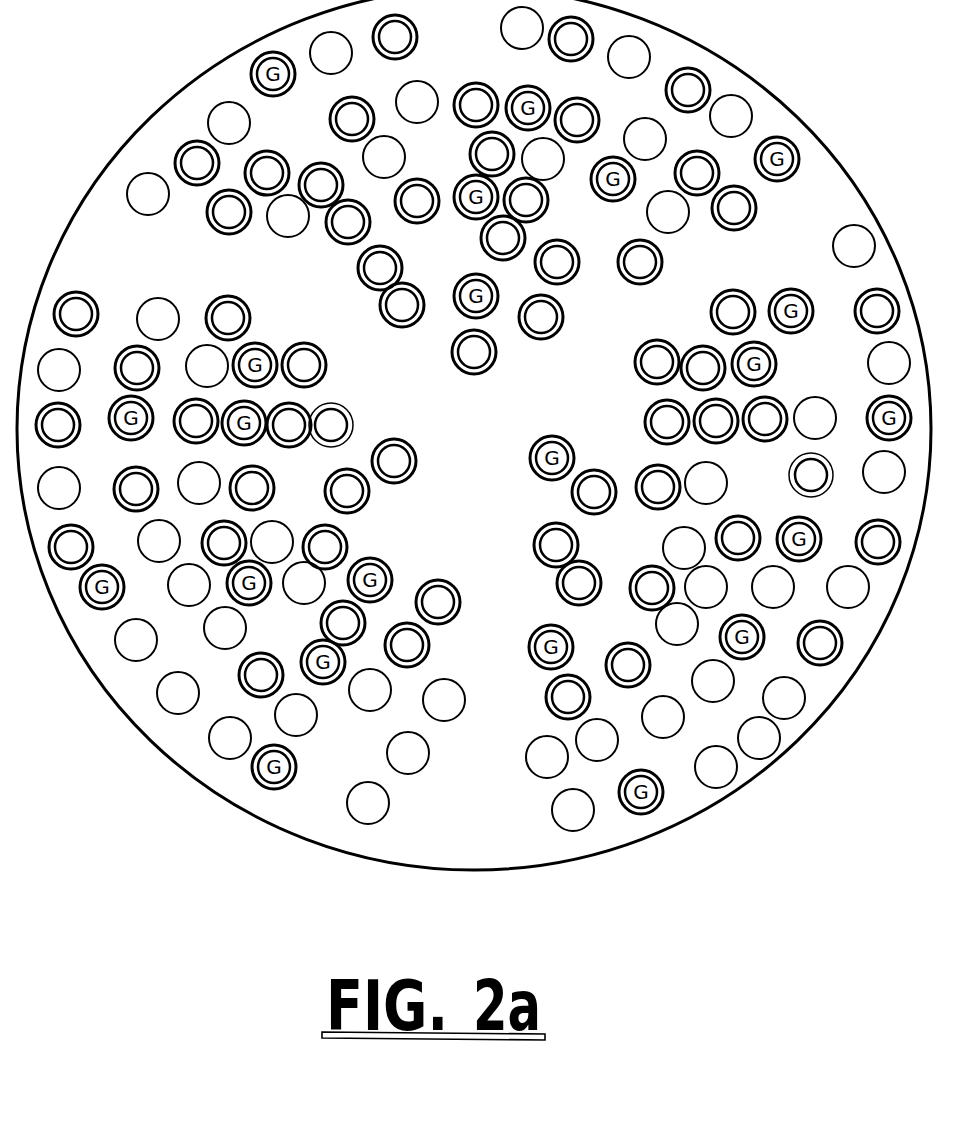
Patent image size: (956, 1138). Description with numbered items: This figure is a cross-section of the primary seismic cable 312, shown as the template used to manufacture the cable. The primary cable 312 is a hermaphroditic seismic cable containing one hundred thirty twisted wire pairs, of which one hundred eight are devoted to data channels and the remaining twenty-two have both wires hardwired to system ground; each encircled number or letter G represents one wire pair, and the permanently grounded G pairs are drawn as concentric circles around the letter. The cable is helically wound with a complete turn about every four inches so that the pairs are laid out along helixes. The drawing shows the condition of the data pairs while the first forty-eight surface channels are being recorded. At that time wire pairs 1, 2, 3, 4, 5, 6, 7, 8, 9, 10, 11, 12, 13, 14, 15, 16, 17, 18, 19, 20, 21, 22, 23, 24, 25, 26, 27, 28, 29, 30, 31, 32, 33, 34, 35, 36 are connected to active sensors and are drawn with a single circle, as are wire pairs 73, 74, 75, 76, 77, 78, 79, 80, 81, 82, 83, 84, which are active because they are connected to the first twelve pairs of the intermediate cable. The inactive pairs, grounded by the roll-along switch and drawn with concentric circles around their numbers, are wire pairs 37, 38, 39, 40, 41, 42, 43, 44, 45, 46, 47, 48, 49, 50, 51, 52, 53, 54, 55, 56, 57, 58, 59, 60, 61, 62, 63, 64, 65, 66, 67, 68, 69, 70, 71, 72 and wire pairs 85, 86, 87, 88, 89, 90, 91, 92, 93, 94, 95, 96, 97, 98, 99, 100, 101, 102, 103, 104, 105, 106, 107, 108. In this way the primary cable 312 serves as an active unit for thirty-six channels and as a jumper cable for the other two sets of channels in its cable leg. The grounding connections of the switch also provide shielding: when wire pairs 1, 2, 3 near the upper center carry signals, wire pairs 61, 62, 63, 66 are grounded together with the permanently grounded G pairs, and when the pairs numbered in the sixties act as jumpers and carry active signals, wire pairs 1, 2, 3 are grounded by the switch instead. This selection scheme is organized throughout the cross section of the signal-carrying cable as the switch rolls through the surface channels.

The primary seismic cable 312 is at (195, 814).
The wire pair 1 is at (522, 28).
The wire pair 2 is at (629, 57).
The wire pair 3 is at (543, 159).
The wire pair 4 is at (731, 116).
The wire pair 5 is at (645, 139).
The wire pair 6 is at (668, 212).
The wire pair 7 is at (854, 246).
The wire pair 8 is at (889, 363).
The wire pair 9 is at (815, 418).
The wire pair 10 is at (884, 472).
The wire pair 11 is at (848, 587).
The wire pair 12 is at (706, 483).
The wire pair 13 is at (784, 698).
The wire pair 14 is at (713, 681).
The wire pair 15 is at (706, 587).
The wire pair 16 is at (716, 767).
The wire pair 17 is at (573, 810).
The wire pair 18 is at (547, 757).
The wire pair 19 is at (368, 803).
The wire pair 20 is at (230, 738).
The wire pair 21 is at (370, 690).
The wire pair 22 is at (136, 640).
The wire pair 23 is at (225, 628).
The wire pair 24 is at (272, 542).
The wire pair 25 is at (59, 488).
The wire pair 26 is at (159, 541).
The wire pair 27 is at (199, 483).
The wire pair 28 is at (59, 370).
The wire pair 29 is at (158, 319).
The wire pair 30 is at (207, 366).
The wire pair 31 is at (148, 194).
The wire pair 32 is at (229, 123).
The wire pair 33 is at (288, 216).
The wire pair 34 is at (331, 53).
The wire pair 35 is at (417, 102).
The wire pair 36 is at (384, 157).
The wire pair 37 is at (734, 208).
The wire pair 38 is at (224, 543).
The wire pair 39 is at (820, 643).
The wire pair 40 is at (394, 461).
The wire pair 41 is at (261, 675).
The wire pair 42 is at (71, 547).
The wire pair 43 is at (196, 421).
The wire pair 44 is at (492, 154).
The wire pair 45 is at (229, 212).
The wire pair 46 is at (417, 201).
The wire pair 47 is at (321, 185).
The wire pair 48 is at (395, 37).
The wire pair 49 is at (289, 425).
The wire pair 50 is at (325, 547).
The wire pair 51 is at (407, 645).
The wire pair 52 is at (556, 545).
The wire pair 53 is at (568, 697).
The wire pair 54 is at (652, 588).
The wire pair 55 is at (658, 487).
The wire pair 56 is at (716, 421).
The wire pair 57 is at (657, 362).
The wire pair 58 is at (541, 317).
The wire pair 59 is at (402, 305).
The wire pair 60 is at (557, 262).
The wire pair 61 is at (526, 200).
The wire pair 62 is at (577, 120).
The wire pair 63 is at (571, 39).
The wire pair 64 is at (640, 262).
The wire pair 65 is at (697, 173).
The wire pair 66 is at (688, 90).
The wire pair 67 is at (877, 311).
The wire pair 68 is at (765, 419).
The wire pair 69 is at (733, 312).
The wire pair 70 is at (878, 542).
The wire pair 71 is at (811, 475).
The wire pair 72 is at (738, 538).
The wire pair 73 is at (684, 548).
The wire pair 74 is at (773, 587).
The wire pair 75 is at (677, 624).
The wire pair 76 is at (759, 738).
The wire pair 77 is at (597, 740).
The wire pair 78 is at (663, 717).
The wire pair 79 is at (444, 700).
The wire pair 80 is at (408, 753).
The wire pair 81 is at (296, 715).
The wire pair 82 is at (304, 583).
The wire pair 83 is at (189, 585).
The wire pair 84 is at (178, 693).
The wire pair 85 is at (252, 488).
The wire pair 86 is at (136, 489).
The wire pair 87 is at (58, 425).
The wire pair 88 is at (228, 318).
The wire pair 89 is at (137, 368).
The wire pair 90 is at (76, 314).
The wire pair 91 is at (348, 222).
The wire pair 92 is at (267, 173).
The wire pair 93 is at (197, 163).
The wire pair 94 is at (476, 105).
The wire pair 95 is at (352, 119).
The wire pair 96 is at (304, 365).
The wire pair 97 is at (331, 425).
The wire pair 98 is at (347, 491).
The wire pair 99 is at (343, 623).
The wire pair 100 is at (438, 602).
The wire pair 101 is at (628, 665).
The wire pair 102 is at (579, 583).
The wire pair 103 is at (594, 492).
The wire pair 104 is at (667, 422).
The wire pair 105 is at (474, 352).
The wire pair 106 is at (703, 368).
The wire pair 107 is at (503, 238).
The wire pair 108 is at (380, 268).